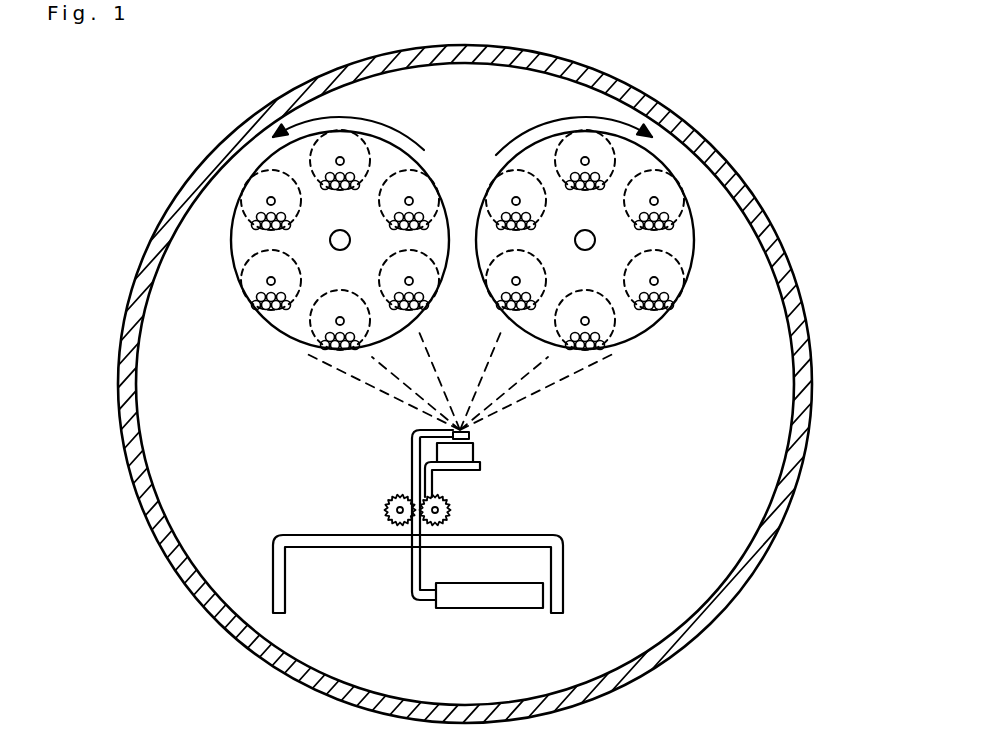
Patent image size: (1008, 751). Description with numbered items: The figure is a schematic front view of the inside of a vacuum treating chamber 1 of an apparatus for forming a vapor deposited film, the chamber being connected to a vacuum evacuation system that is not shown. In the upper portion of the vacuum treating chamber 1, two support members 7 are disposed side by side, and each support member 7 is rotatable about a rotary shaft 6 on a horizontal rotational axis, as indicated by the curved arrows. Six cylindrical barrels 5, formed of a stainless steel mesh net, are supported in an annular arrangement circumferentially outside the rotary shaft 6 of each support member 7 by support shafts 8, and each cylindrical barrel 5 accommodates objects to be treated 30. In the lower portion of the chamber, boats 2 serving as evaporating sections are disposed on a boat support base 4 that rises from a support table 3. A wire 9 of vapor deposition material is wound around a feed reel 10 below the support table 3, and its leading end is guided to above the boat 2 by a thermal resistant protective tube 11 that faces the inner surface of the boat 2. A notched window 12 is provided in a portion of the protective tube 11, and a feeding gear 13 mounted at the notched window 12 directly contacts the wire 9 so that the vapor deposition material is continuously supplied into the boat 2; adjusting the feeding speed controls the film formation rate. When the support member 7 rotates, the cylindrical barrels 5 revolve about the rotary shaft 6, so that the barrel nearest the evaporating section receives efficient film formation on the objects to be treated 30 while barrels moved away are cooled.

The vacuum treating chamber 1 is at (212, 153).
The boat 2 is at (468, 456).
The support table 3 is at (552, 552).
The boat support base 4 is at (465, 468).
The cylindrical barrel 5 is at (245, 216).
The rotary shaft 6 is at (337, 250).
The support member 7 is at (250, 216).
The support shaft 8 is at (514, 197).
The wire 9 is at (471, 437).
The feed reel 10 is at (483, 600).
The thermal resistant protective tube 11 is at (414, 431).
The notched window 12 is at (415, 495).
The feeding gear 13 is at (431, 526).
The object to be treated 30 is at (346, 346).